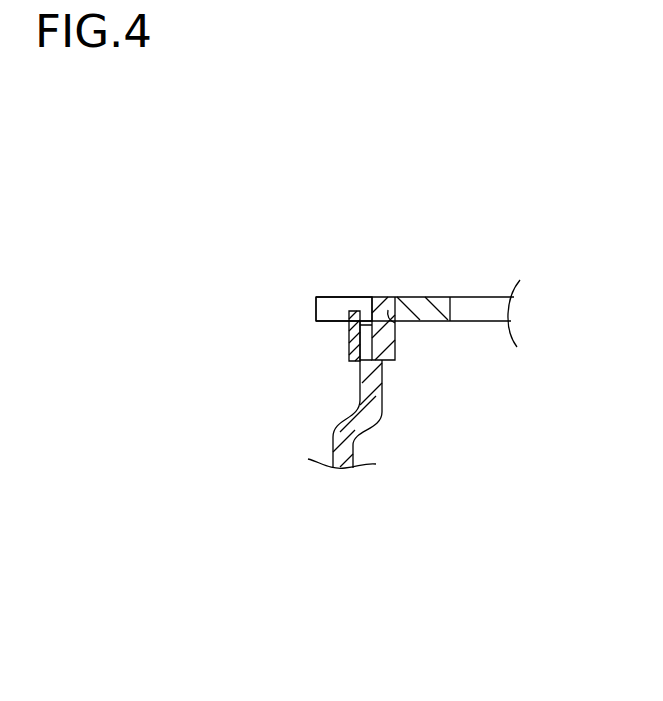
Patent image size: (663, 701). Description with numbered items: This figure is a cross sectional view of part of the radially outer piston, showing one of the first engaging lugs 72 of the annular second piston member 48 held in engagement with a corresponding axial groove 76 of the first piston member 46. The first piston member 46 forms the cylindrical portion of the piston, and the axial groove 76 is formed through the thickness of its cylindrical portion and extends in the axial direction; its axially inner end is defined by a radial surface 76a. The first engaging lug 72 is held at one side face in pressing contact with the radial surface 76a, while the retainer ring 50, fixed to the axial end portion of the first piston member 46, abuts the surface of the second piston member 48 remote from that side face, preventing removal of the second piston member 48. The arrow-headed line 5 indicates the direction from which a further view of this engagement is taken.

The first piston member 46 is at (485, 263).
The axial groove 76 is at (319, 296).
The first engaging lug 72 is at (378, 296).
The radial surface 76a is at (386, 314).
The retainer ring 50 is at (350, 353).
The second piston member 48 is at (318, 417).
The arrow-headed line 5 is at (388, 258).